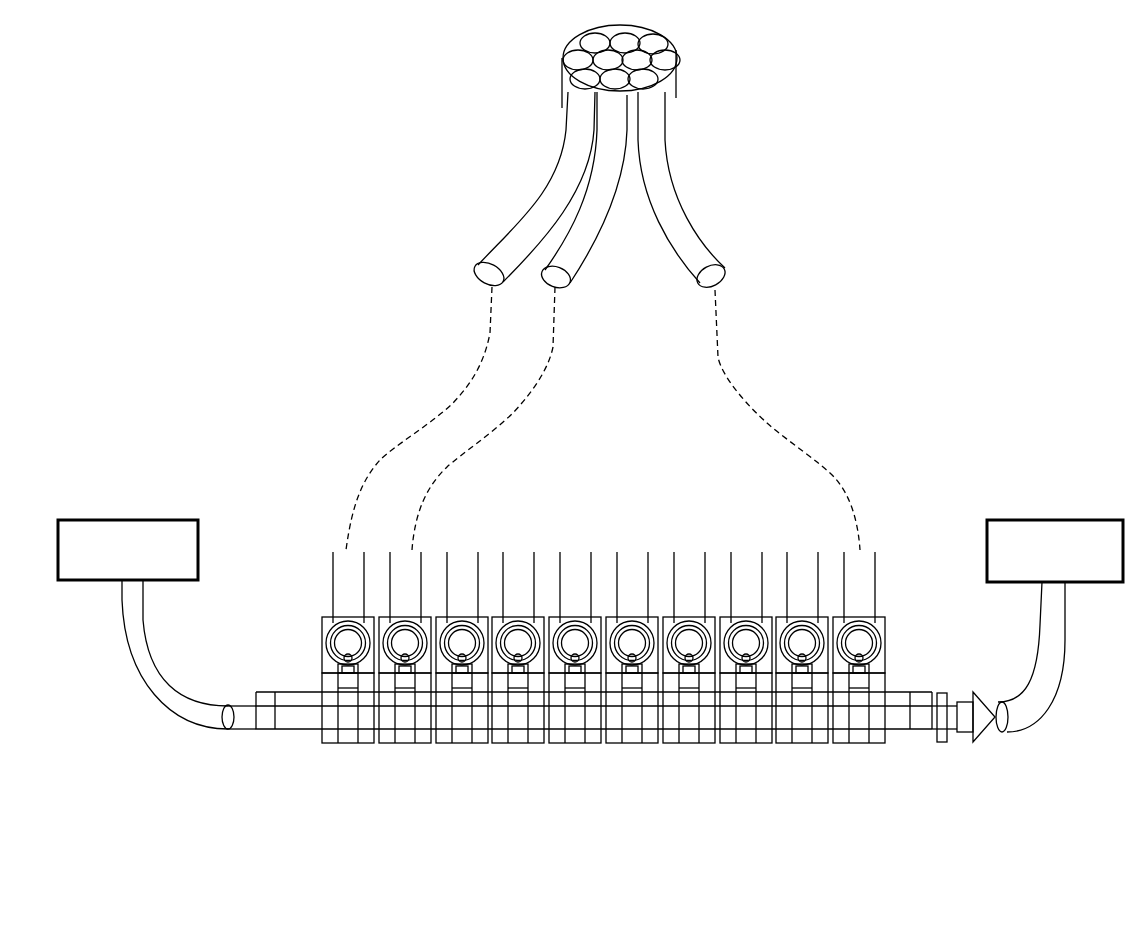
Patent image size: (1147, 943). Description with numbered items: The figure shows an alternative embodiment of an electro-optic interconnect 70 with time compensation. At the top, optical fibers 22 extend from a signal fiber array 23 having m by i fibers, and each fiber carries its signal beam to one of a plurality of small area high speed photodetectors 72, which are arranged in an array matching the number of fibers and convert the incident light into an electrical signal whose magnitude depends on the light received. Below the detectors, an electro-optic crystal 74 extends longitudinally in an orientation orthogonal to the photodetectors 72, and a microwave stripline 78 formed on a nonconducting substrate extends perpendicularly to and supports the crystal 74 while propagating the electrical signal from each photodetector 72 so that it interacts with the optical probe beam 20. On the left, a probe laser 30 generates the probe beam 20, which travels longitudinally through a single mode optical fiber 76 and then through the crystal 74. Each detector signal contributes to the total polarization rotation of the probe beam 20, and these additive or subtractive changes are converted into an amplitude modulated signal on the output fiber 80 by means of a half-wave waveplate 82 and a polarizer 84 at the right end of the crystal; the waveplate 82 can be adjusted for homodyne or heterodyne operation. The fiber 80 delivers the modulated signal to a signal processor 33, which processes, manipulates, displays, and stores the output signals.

The electro-optic interconnect 70 is at (281, 290).
The fiber array 23 is at (570, 51).
The optical fibers 22 is at (538, 193).
The photodetector 72 is at (330, 641).
The microwave stripline 78 is at (347, 686).
The electro-optic crystal 74 is at (303, 692).
The probe beam 20 is at (247, 718).
The single mode optical fiber 76 is at (122, 636).
The probe laser 30 is at (180, 538).
The signal processor 33 is at (1106, 538).
The fiber 80 is at (1060, 673).
The λ/2 waveplate 82 is at (941, 742).
The polarizer 84 is at (980, 728).